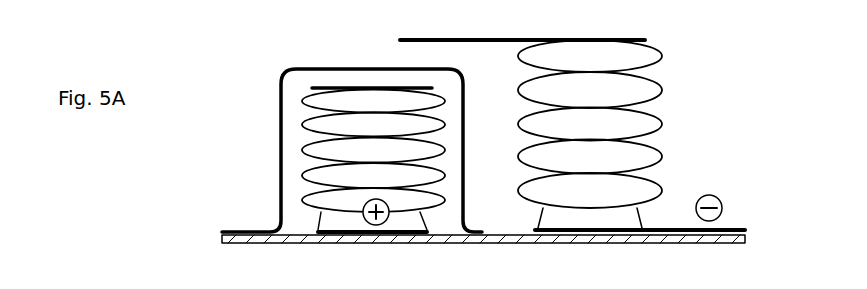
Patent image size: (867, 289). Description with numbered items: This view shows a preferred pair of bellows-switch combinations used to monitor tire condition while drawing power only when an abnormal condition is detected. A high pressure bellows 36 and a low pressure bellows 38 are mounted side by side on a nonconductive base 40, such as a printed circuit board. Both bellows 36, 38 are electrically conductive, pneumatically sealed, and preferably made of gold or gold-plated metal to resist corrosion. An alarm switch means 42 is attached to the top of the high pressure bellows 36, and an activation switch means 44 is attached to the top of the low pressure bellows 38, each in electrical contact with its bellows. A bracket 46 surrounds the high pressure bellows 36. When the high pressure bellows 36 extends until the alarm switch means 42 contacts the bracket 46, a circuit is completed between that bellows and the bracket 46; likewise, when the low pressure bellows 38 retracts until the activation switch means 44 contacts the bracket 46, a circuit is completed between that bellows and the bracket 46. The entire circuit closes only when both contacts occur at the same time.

The high pressure bellows 36 is at (357, 155).
The low pressure bellows 38 is at (585, 152).
The nonconductive base 40 is at (221, 245).
The alarm switch means 42 is at (368, 87).
The activation switch means 44 is at (500, 40).
The bracket 46 is at (280, 147).